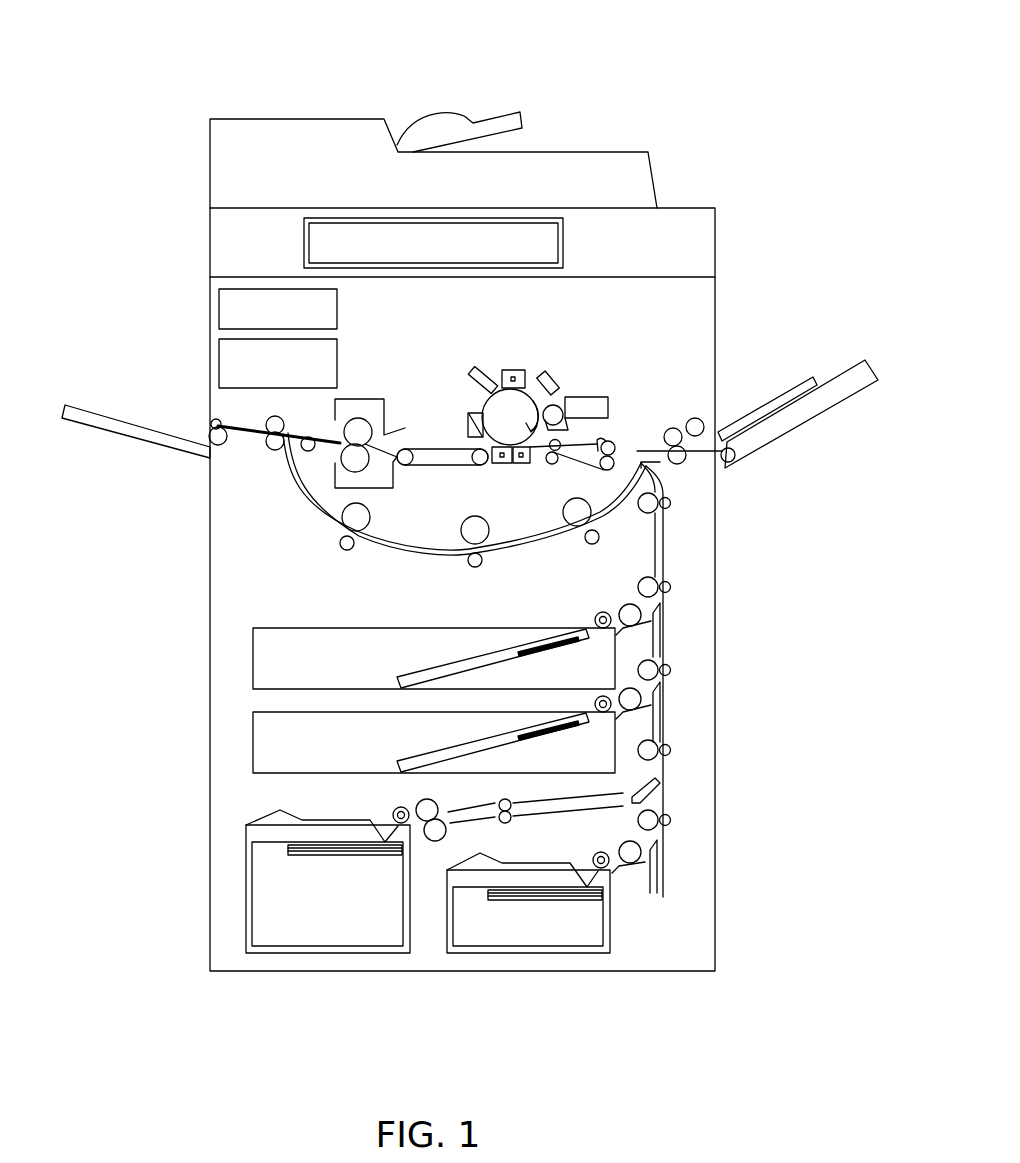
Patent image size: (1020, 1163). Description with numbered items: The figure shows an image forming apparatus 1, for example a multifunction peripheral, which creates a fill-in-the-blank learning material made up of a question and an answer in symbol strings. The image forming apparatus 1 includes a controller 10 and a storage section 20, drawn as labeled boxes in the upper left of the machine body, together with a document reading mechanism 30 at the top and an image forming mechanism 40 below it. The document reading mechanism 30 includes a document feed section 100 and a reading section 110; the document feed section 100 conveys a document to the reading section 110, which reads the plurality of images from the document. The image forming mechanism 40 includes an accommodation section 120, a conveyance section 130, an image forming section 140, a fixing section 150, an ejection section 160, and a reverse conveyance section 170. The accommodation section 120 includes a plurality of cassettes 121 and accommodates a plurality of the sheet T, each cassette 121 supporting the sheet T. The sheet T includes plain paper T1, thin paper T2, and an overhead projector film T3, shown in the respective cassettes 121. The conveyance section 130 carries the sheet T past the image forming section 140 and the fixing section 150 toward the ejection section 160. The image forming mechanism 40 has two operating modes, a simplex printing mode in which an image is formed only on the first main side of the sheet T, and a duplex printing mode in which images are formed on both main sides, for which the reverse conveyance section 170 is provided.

The image forming apparatus 1 is at (496, 71).
The controller 10 is at (219, 309).
The storage section 20 is at (219, 358).
The document reading mechanism 30 is at (681, 127).
The image forming mechanism 40 is at (316, 557).
The document feed section 100 is at (595, 150).
The reading section 110 is at (210, 260).
The accommodation section 120 is at (386, 800).
The cassette 121 is at (253, 670).
The conveyance section 130 is at (699, 706).
The image forming section 140 is at (608, 362).
The fixing section 150 is at (379, 371).
The ejection section 160 is at (186, 422).
The reverse conveyance section 170 is at (292, 527).
The sheet T is at (362, 800).
The plain paper T1 is at (462, 662).
The thin paper T2 is at (267, 903).
The overhead projector (OHP) film T3 is at (533, 937).